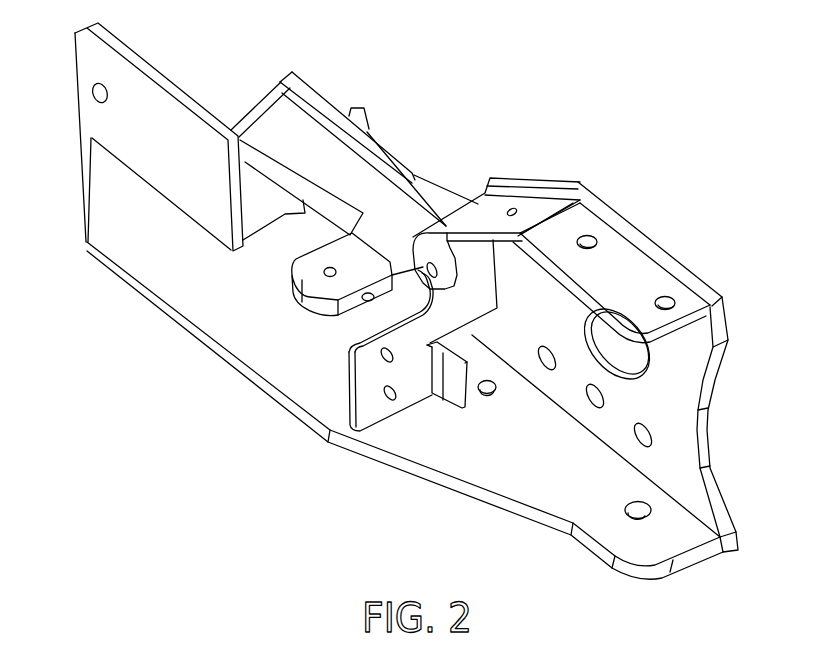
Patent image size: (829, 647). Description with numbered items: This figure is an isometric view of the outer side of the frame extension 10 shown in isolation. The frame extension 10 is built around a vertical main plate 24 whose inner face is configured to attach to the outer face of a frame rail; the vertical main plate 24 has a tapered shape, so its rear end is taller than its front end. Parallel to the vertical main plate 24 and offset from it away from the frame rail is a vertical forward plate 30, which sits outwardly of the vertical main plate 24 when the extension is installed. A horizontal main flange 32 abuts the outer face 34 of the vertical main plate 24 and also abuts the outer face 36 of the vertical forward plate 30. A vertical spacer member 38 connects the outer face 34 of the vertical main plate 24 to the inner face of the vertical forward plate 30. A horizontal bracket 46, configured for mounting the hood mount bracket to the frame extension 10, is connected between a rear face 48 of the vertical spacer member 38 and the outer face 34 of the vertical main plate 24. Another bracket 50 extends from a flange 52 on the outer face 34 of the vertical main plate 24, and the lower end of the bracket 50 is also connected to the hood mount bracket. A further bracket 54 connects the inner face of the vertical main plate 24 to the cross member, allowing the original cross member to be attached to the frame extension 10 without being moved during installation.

The frame extension 10 is at (615, 108).
The vertical main plate 24 is at (680, 385).
The vertical forward plate 30 is at (153, 117).
The horizontal main flange 32 is at (492, 468).
The outer face of the vertical main plate 34 is at (685, 428).
The outer face of the vertical forward plate 36 is at (114, 136).
The vertical spacer member 38 is at (263, 97).
The horizontal bracket 46 is at (368, 180).
The rear face of the vertical spacer member 48 is at (264, 208).
The bracket 50 is at (378, 403).
The flange 52 is at (630, 268).
The bracket 54 is at (352, 110).